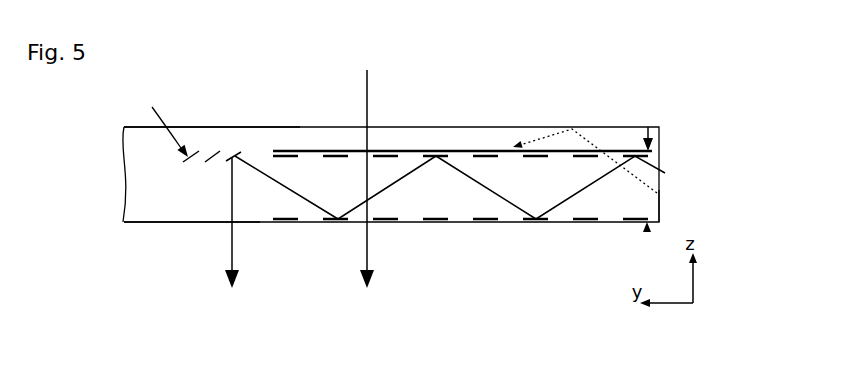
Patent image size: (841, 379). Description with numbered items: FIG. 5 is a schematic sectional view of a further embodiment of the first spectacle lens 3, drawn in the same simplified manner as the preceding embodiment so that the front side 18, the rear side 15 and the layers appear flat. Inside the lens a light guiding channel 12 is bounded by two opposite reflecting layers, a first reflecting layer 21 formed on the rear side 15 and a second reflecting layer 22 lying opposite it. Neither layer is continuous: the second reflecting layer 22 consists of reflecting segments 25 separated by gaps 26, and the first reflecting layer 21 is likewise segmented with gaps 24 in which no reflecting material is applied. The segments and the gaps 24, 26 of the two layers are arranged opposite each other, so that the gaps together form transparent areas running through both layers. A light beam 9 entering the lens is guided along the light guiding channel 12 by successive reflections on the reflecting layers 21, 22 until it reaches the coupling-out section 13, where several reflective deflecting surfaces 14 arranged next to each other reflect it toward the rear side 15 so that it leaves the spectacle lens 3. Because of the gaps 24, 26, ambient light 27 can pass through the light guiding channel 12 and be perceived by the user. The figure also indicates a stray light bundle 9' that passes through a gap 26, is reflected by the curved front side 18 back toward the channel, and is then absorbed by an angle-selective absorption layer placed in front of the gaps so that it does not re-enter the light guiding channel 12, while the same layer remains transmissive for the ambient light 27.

The first spectacle lens 3 is at (132, 183).
The light beam 9 is at (415, 222).
The light bundle 9' is at (607, 161).
The light guiding channel 12 is at (640, 205).
The coupling-out section 13 is at (160, 121).
The reflective deflecting surfaces 14 is at (235, 150).
The rear side 15 is at (144, 224).
The front side 18 is at (131, 125).
The first reflecting layer 21 is at (648, 233).
The second reflecting layer 22 is at (652, 127).
The gaps 24 is at (632, 223).
The reflecting segments 25 is at (635, 151).
The gaps 26 is at (608, 157).
The ambient light 27 is at (362, 265).